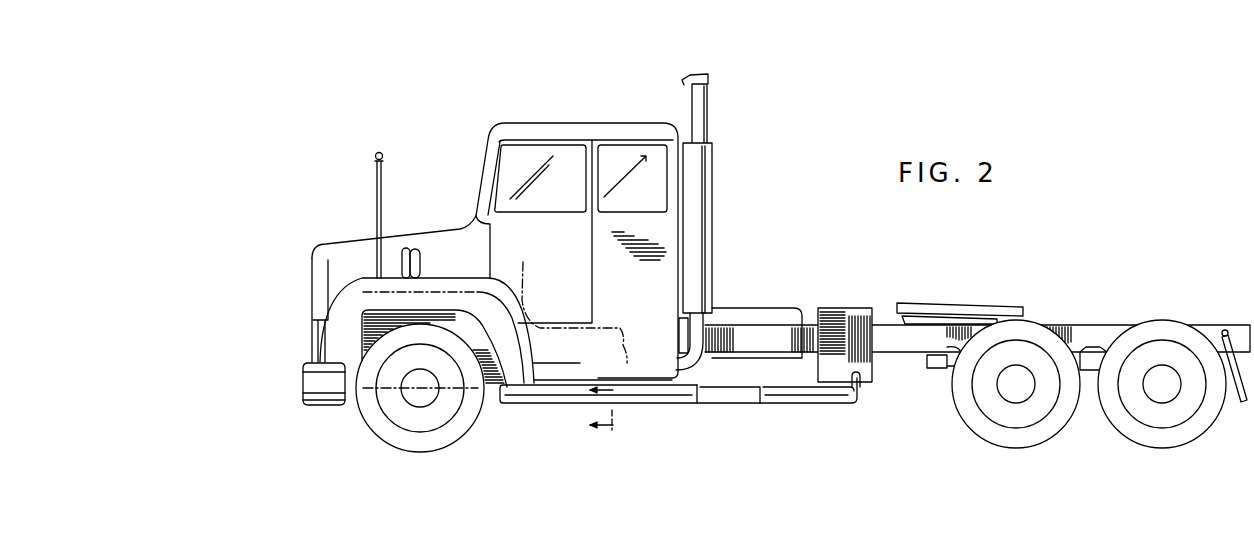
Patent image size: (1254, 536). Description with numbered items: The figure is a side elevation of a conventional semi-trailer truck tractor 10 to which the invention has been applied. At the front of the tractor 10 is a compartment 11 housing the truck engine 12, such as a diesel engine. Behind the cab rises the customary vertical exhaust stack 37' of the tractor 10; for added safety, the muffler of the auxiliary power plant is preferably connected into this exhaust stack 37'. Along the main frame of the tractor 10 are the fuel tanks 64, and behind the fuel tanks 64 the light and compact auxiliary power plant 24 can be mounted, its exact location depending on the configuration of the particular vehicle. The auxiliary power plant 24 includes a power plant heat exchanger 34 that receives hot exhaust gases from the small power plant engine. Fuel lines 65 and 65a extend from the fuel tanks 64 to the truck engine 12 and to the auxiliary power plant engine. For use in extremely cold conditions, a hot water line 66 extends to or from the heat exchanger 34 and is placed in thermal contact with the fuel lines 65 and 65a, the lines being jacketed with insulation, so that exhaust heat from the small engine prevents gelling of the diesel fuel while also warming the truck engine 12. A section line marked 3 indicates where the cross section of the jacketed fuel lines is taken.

The tractor 10 is at (484, 120).
The compartment 11 is at (353, 260).
The truck engine 12 is at (523, 262).
The vertical exhaust stack 37' is at (722, 222).
The fuel tanks 64 is at (758, 318).
The auxiliary power plant 24 is at (842, 310).
The fuel line 65 is at (548, 402).
The fuel line 65a is at (843, 380).
The power plant heat exchanger 34 is at (866, 359).
The hot water line 66 is at (858, 380).
The section line 3- 3 is at (598, 409).